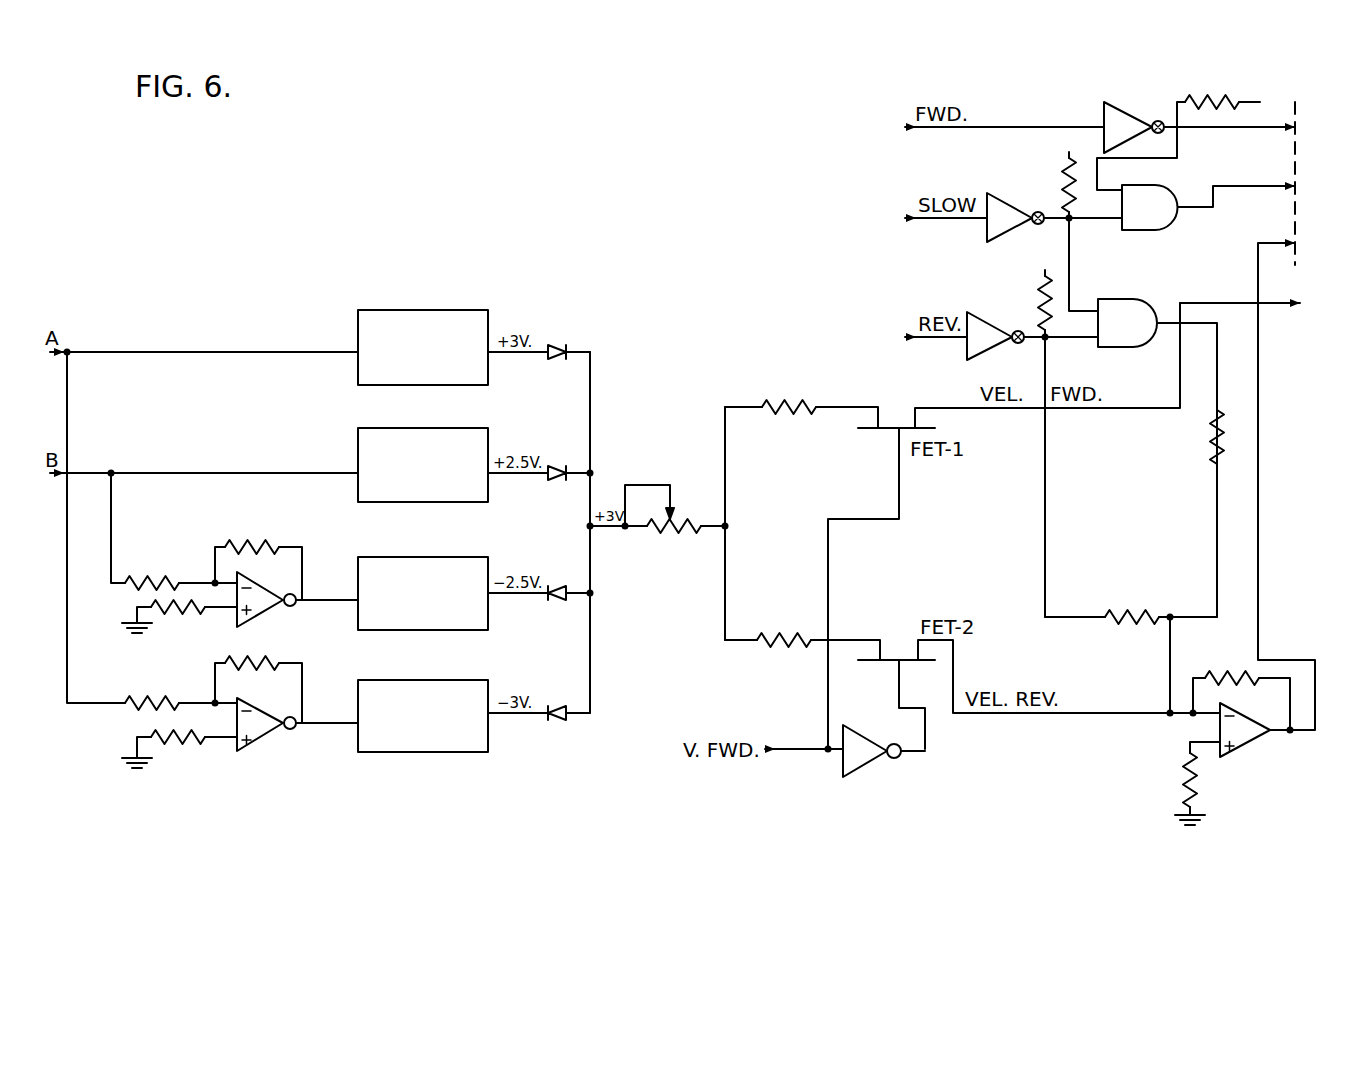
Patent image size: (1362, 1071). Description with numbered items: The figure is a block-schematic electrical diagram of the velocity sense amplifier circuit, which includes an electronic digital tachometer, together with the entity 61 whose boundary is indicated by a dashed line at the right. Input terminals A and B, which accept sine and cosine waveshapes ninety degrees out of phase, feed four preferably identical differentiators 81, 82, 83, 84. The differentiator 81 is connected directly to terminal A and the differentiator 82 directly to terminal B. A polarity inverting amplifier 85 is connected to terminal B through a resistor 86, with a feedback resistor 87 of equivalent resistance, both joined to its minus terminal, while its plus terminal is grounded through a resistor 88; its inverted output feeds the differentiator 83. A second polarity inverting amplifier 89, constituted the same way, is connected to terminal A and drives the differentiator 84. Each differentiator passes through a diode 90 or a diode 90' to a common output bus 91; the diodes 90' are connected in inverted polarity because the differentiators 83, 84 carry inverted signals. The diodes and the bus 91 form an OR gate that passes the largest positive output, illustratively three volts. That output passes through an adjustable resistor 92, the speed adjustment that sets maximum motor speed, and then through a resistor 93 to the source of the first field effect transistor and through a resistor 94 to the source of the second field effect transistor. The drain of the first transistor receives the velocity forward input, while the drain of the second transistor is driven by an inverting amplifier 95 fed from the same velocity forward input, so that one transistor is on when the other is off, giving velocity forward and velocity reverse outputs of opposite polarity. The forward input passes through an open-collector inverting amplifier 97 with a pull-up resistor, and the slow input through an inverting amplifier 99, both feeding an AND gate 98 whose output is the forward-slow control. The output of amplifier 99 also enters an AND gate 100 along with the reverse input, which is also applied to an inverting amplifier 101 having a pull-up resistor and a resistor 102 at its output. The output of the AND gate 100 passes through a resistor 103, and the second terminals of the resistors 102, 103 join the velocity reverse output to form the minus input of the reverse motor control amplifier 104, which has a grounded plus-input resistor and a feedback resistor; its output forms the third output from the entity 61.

The entity 61 is at (1298, 166).
The differentiator 81 is at (440, 312).
The differentiator 82 is at (440, 430).
The differentiator 83 is at (440, 559).
The differentiator 84 is at (440, 682).
The polarity inverting amplifier 85 is at (257, 584).
The resistor 86 is at (139, 581).
The feedback resistor 87 is at (268, 544).
The resistor 88 is at (170, 611).
The polarity inverting amplifier 89 is at (257, 714).
The diode 90 is at (539, 400).
The diode 90' is at (539, 640).
The common output bus 91 is at (592, 407).
The adjustable resistor 92 is at (683, 516).
The resistor 93 is at (787, 407).
The resistor 94 is at (867, 637).
The inverting amplifier 95 is at (873, 733).
The inverting amplifier 97 is at (1140, 118).
The AND gate 98 is at (1173, 196).
The inverting amplifier 99 is at (1016, 211).
The AND gate 100 is at (1159, 300).
The inverting amplifier 101 is at (998, 321).
The resistor 102 is at (1131, 606).
The resistor 103 is at (1211, 438).
The reverse motor control amplifier 104 is at (1252, 741).